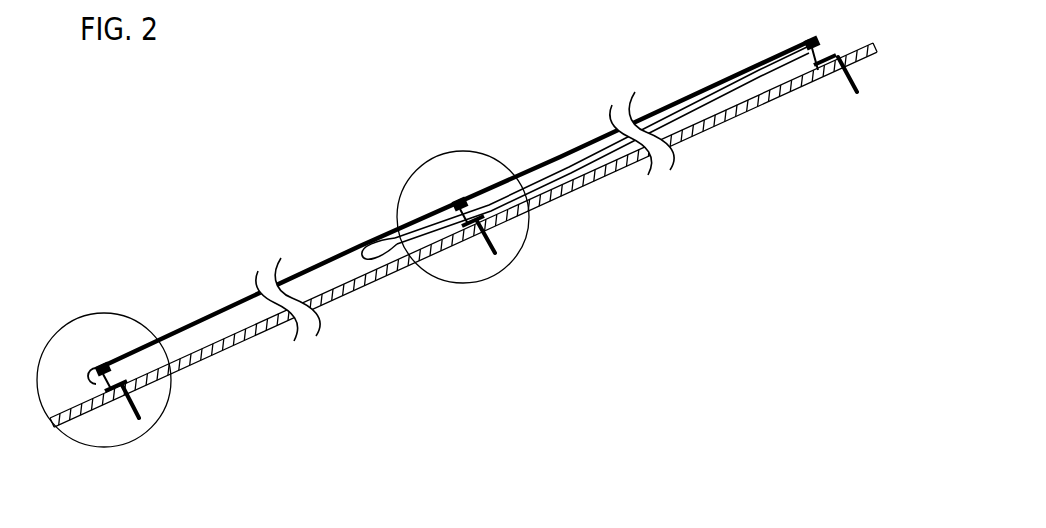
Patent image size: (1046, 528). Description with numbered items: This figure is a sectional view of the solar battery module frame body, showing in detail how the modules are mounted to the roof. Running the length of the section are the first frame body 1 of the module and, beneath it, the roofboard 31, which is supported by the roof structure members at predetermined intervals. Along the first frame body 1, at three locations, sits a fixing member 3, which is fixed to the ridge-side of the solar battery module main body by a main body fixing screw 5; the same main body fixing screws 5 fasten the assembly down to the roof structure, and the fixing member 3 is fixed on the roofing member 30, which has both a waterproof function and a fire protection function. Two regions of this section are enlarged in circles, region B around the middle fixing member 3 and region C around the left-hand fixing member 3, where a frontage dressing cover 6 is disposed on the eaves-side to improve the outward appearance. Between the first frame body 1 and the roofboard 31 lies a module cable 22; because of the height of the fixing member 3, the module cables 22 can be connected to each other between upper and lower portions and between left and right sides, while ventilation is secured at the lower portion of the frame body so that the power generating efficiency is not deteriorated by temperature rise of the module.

The first frame body 1 is at (105, 366).
The fixing member 3 is at (111, 392).
The main body fixing screw 5 is at (137, 405).
The frontage dressing cover 6 is at (85, 382).
The module cable 22 is at (545, 186).
The roofing member 30 is at (214, 318).
The roofboard 31 is at (258, 338).
The region B is at (397, 203).
The region C is at (64, 318).